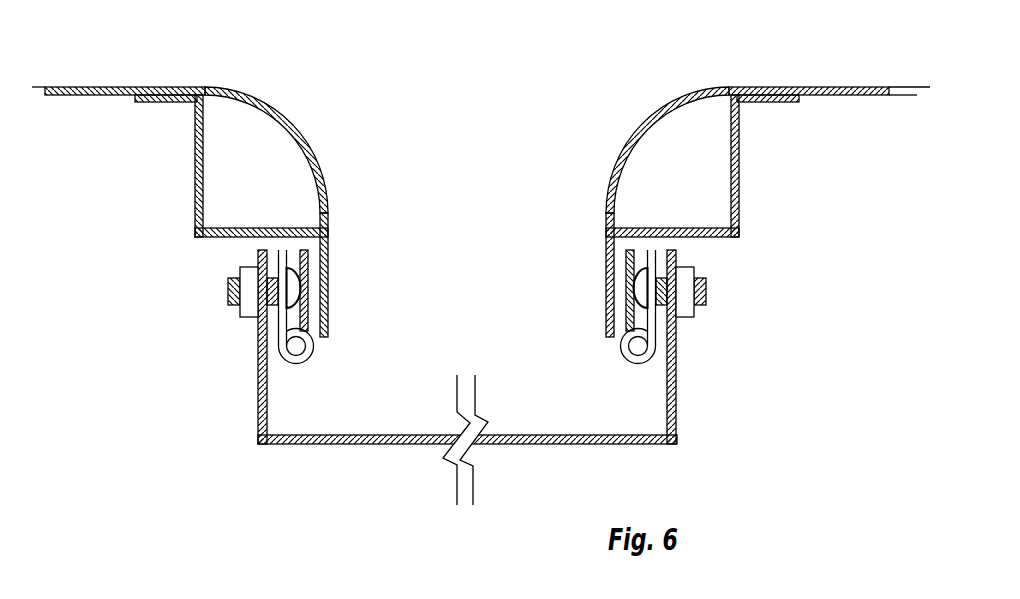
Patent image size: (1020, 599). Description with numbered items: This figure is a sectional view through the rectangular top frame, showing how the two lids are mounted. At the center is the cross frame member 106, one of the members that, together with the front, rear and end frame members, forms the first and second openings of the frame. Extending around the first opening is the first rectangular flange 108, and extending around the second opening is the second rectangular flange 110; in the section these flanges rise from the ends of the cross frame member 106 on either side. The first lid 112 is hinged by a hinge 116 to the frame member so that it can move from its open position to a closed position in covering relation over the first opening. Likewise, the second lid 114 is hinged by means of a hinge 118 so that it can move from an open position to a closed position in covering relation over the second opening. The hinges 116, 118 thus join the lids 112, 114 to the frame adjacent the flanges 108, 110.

The cross frame member 106 is at (590, 435).
The first rectangular flange 108 is at (257, 393).
The second rectangular flange 110 is at (677, 349).
The first lid 112 is at (196, 87).
The second lid 114 is at (787, 88).
The hinge 116 is at (288, 368).
The hinge 118 is at (623, 356).